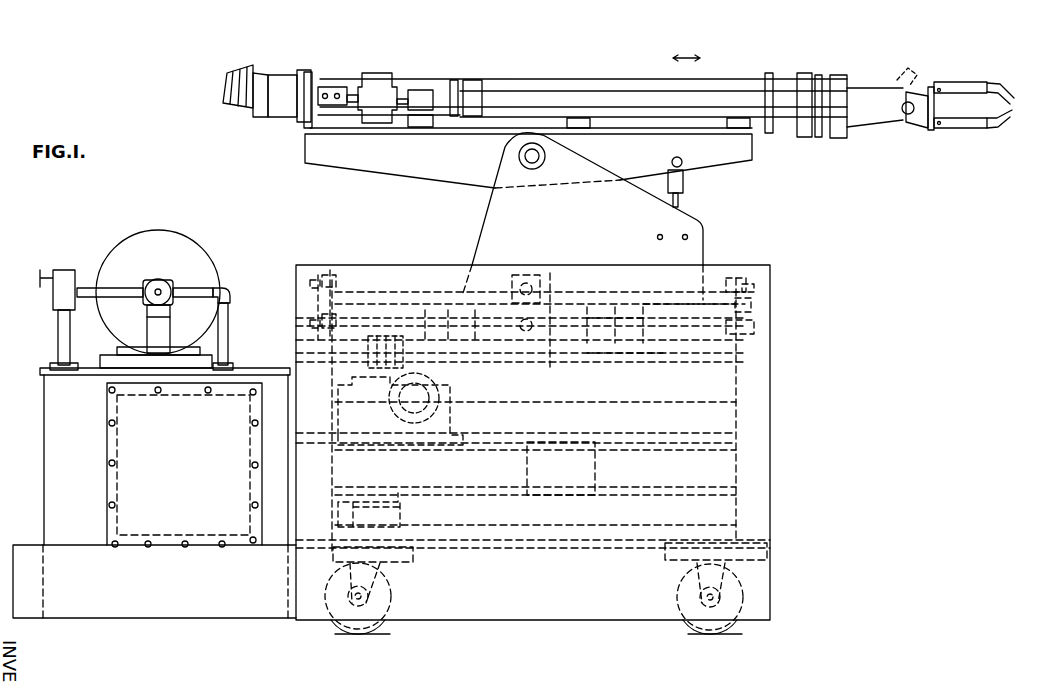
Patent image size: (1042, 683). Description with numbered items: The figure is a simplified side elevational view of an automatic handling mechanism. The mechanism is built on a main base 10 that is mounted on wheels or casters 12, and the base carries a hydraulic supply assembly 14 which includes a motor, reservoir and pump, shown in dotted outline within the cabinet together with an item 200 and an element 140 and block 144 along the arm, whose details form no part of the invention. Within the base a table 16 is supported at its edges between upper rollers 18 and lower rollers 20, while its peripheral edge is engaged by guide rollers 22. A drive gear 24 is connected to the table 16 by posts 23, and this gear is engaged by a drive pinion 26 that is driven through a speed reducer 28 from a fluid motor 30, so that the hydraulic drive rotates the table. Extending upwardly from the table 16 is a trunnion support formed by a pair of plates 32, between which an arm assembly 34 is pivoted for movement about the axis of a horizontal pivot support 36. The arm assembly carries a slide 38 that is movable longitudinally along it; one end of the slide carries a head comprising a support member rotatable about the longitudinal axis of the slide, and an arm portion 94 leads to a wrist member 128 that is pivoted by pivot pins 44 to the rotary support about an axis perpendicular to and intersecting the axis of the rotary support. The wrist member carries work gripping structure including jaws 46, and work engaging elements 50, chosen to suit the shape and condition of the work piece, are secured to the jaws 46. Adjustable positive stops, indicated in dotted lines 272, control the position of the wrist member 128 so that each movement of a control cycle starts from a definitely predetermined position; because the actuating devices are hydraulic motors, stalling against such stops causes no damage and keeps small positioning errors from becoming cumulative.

The main base 10 is at (770, 472).
The wheels or casters 12 is at (737, 630).
The hydraulic supply assembly 14 is at (45, 452).
The table 16 is at (692, 315).
The upper rollers 18 is at (350, 282).
The lower rollers 20 is at (343, 322).
The guide rollers 22 is at (757, 303).
The posts 23 is at (647, 333).
The drive gear 24 is at (665, 353).
The drive pinion 26 is at (368, 347).
The speed reducer 28 is at (338, 397).
The fluid motor 30 is at (393, 410).
The plates 32 is at (482, 227).
The arm assembly 34 is at (371, 180).
The horizontal pivot support 36 is at (545, 156).
The slide 38 is at (728, 80).
The pivot pins 44 is at (908, 114).
The jaws 46 is at (980, 85).
The work engaging elements 50 is at (1000, 128).
The arm 94 is at (870, 87).
The wrist member 128 is at (920, 90).
The flange 140 is at (312, 73).
The coupling block 144 is at (377, 73).
The tank 200 is at (435, 478).
The adjustable stops 272 is at (908, 70).